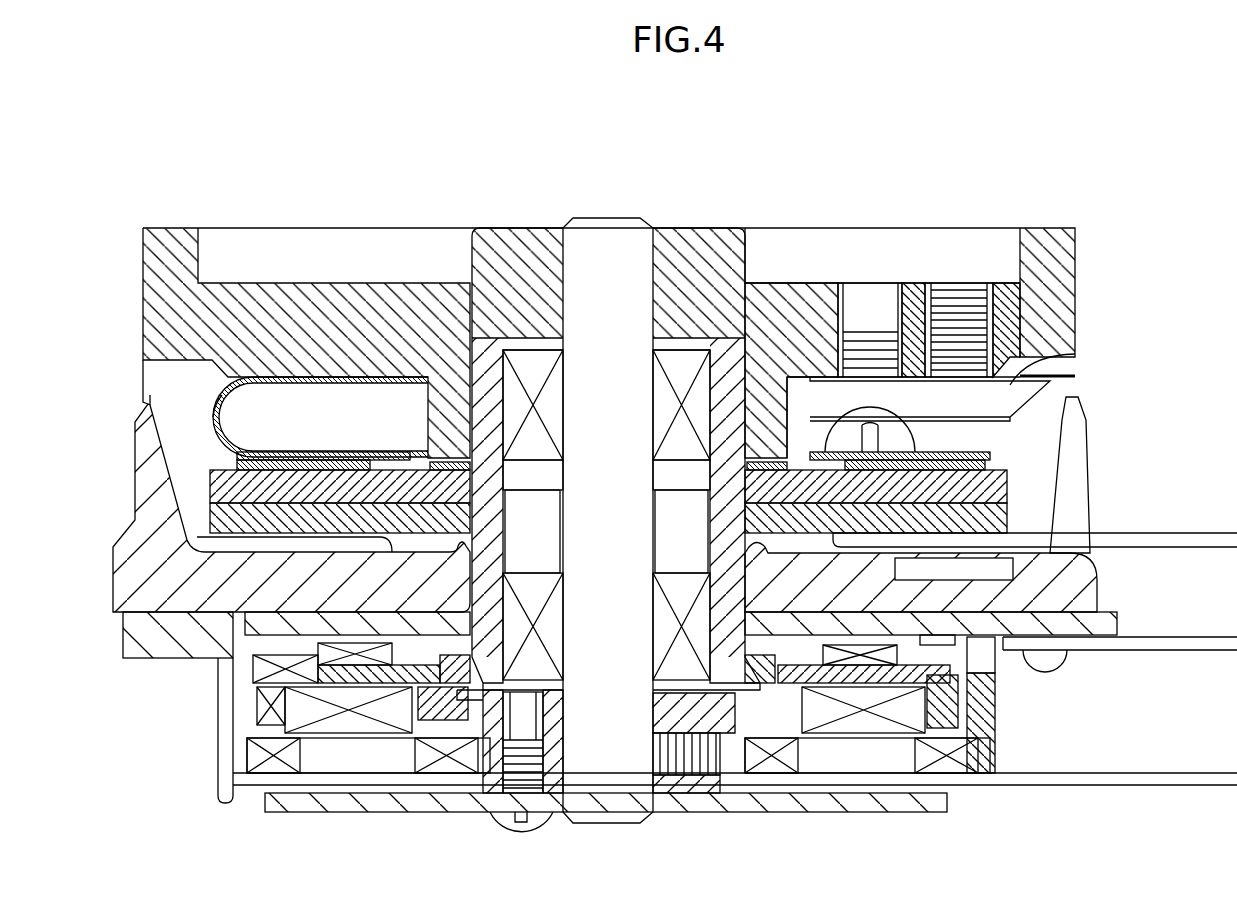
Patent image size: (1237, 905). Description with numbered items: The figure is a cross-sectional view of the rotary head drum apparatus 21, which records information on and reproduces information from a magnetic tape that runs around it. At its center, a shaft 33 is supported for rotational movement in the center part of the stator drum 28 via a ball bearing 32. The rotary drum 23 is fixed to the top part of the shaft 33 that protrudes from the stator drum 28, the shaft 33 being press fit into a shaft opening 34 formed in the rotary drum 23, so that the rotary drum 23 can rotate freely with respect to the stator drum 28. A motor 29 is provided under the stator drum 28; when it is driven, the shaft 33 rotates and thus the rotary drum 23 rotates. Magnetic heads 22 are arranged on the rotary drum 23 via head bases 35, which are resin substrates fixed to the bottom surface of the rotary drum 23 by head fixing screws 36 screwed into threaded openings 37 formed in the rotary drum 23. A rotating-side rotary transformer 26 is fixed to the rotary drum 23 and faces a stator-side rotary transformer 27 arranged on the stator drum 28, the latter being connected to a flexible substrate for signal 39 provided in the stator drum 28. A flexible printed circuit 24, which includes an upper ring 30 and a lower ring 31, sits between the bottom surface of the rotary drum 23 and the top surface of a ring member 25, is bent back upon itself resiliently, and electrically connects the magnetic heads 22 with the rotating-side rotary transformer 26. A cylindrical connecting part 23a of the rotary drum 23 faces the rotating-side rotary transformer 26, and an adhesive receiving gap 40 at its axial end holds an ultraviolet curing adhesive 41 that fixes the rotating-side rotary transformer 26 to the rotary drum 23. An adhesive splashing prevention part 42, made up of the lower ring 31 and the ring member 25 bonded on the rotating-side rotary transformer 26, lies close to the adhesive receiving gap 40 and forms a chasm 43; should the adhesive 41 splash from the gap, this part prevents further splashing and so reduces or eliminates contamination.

The rotary head drum apparatus 21 is at (1044, 120).
The magnetic heads 22 is at (1077, 378).
The rotary drum 23 is at (1072, 262).
The cylindrical connecting part 23a is at (773, 445).
The flexible printed circuit 24 is at (213, 411).
The ring member 25 is at (237, 466).
The rotating-side rotary transformer 26 is at (1008, 490).
The stator-side rotary transformer 27 is at (1008, 522).
The stator drum 28 is at (1080, 448).
The motor 29 is at (680, 812).
The upper ring 30 is at (368, 388).
The lower ring 31 is at (258, 451).
The ball bearing 32 is at (553, 650).
The shaft 33 is at (598, 248).
The shaft opening 34 is at (652, 250).
The head bases 35 is at (1008, 357).
The head fixing screws 36 is at (866, 472).
The threaded openings 37 is at (843, 428).
The flexible substrate for signal 39 is at (1158, 549).
The adhesive receiving gap 40 is at (470, 462).
The adhesive 41 is at (440, 462).
The adhesive splashing prevention part 42 is at (322, 458).
The chasm 43 is at (388, 454).